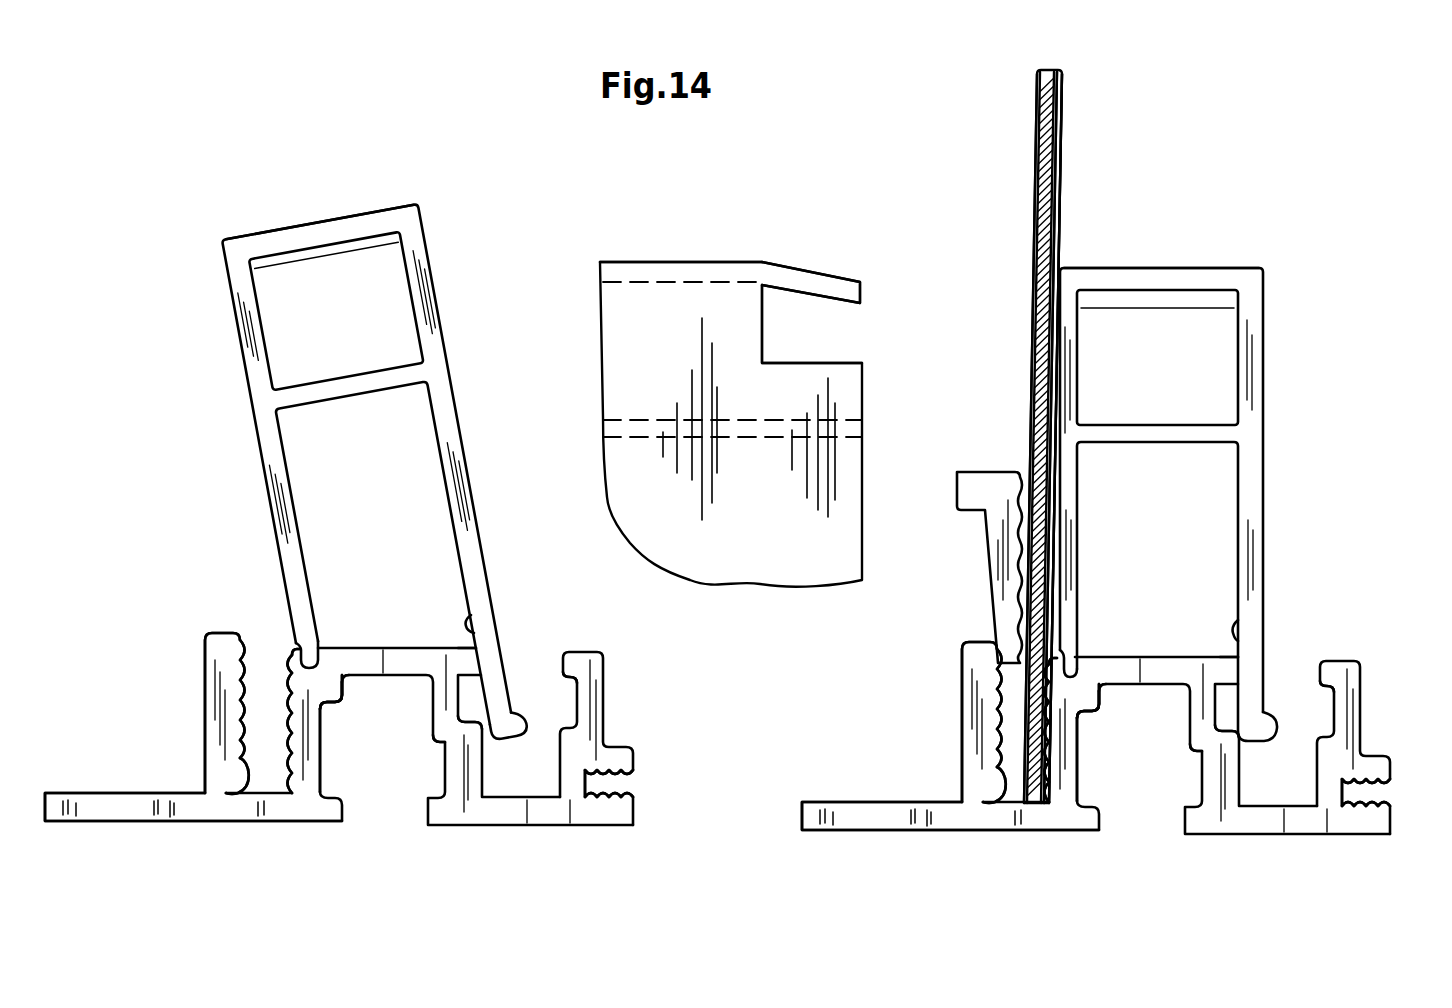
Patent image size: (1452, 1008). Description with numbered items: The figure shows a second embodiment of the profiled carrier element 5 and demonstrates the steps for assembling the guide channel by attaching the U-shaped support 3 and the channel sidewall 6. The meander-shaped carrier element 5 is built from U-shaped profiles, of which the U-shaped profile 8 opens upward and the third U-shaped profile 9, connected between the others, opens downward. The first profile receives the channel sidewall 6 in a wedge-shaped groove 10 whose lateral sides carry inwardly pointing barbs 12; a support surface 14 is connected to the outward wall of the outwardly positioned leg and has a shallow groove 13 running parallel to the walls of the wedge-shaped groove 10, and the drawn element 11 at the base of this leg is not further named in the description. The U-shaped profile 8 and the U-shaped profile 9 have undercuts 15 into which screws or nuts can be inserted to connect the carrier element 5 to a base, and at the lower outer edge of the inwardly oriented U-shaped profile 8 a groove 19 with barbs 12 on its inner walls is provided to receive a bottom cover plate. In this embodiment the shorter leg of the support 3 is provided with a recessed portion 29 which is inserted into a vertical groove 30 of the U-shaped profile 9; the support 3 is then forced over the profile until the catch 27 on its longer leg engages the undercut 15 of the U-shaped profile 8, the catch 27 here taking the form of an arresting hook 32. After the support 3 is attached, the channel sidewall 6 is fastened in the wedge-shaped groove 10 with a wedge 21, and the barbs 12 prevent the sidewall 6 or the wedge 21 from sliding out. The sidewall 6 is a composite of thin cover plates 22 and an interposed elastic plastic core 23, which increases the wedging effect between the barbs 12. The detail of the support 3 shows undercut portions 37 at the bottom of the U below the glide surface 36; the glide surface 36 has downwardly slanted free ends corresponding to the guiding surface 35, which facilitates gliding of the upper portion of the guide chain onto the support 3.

The U-shaped support 3 is at (420, 274).
The profiled carrier element 5 is at (140, 720).
The channel sidewall 6 is at (1017, 147).
The U-shaped profile 8 is at (545, 647).
The U-shaped profile 9 is at (410, 826).
The wedge-shaped groove 10 is at (278, 782).
The wall 11 is at (236, 790).
The barbs 12 is at (240, 696).
The shallow groove 13 is at (128, 793).
The support surface 14 is at (90, 808).
The undercuts 15 is at (471, 690).
The groove 19 is at (616, 787).
The wedge 21 is at (983, 481).
The cover plates 22 is at (1036, 96).
The plastic core 23 is at (1062, 141).
The catch 27 is at (462, 630).
The recessed portion 29 is at (313, 640).
The vertical groove 30 is at (313, 664).
The arresting hook 32 is at (479, 643).
The guiding surface 35 is at (826, 280).
The glide surface 36 is at (265, 238).
The undercut portions 37 is at (838, 330).